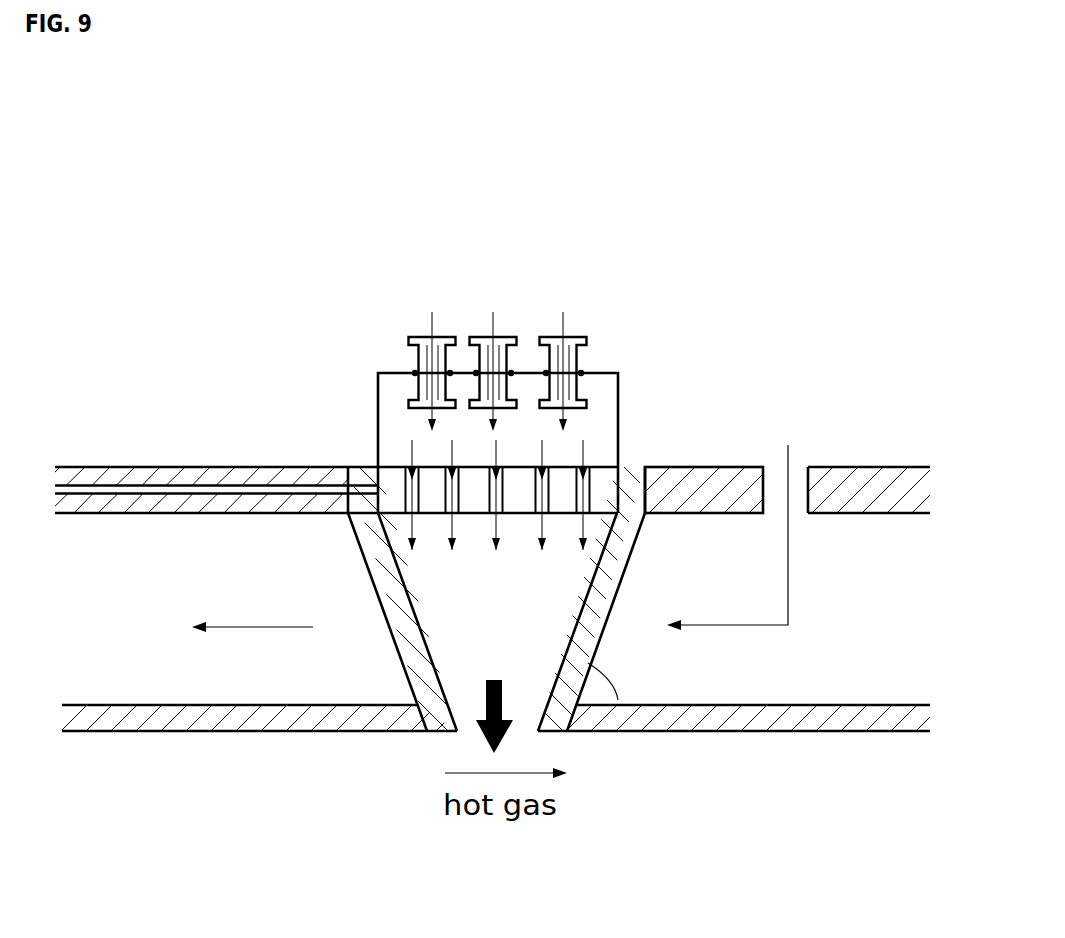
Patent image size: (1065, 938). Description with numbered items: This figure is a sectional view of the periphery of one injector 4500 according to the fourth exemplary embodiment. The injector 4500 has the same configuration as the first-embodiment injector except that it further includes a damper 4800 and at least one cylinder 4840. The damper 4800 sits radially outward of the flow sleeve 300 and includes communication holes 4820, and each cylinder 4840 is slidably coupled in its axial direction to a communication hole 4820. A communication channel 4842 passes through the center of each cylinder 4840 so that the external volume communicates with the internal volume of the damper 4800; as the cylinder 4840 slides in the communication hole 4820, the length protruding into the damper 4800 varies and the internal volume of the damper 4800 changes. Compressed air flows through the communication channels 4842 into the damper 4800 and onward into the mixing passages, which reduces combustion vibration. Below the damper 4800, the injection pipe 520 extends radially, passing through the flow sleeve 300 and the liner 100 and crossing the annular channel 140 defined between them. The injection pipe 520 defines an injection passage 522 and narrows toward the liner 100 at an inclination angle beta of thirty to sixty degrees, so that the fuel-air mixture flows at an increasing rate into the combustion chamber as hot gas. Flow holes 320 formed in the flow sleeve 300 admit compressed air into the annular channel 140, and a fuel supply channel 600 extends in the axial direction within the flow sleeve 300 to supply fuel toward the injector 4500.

The injector 4500 is at (479, 342).
The damper 4800 is at (377, 422).
The communication hole 4820 is at (415, 362).
The cylinder 4840 is at (578, 388).
The communication channel 4842 is at (578, 362).
The flow sleeve 300 is at (221, 477).
The flow hole 320 is at (767, 488).
The fuel supply channel 600 is at (113, 492).
The liner 100 is at (166, 714).
The annular channel 140 is at (183, 640).
The injection pipe 520 is at (400, 612).
The injection passage 522 is at (522, 650).